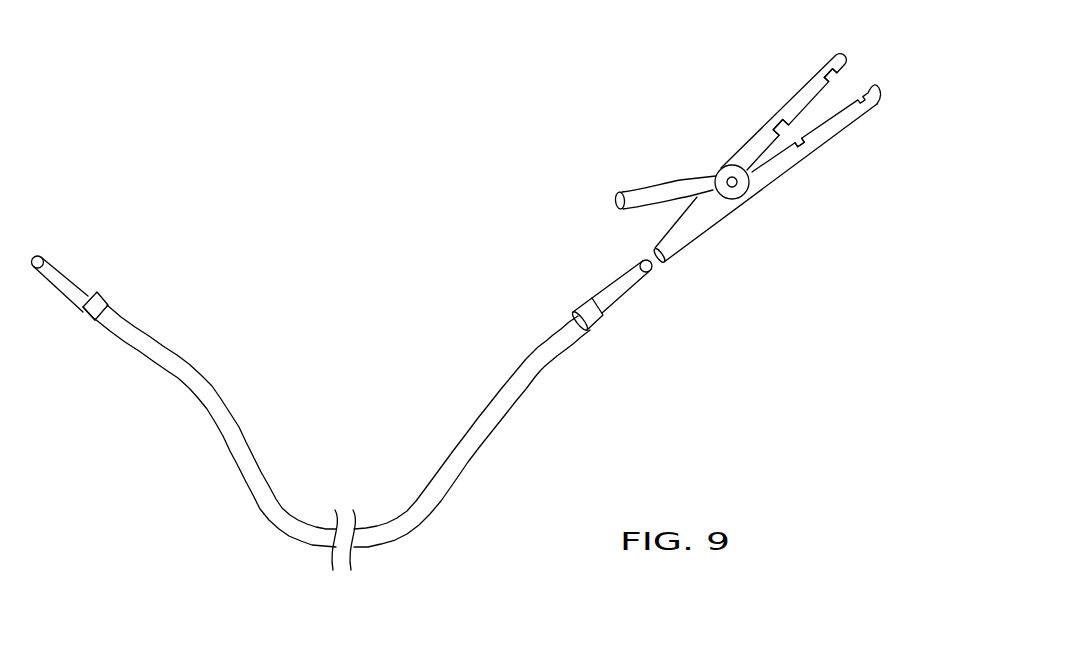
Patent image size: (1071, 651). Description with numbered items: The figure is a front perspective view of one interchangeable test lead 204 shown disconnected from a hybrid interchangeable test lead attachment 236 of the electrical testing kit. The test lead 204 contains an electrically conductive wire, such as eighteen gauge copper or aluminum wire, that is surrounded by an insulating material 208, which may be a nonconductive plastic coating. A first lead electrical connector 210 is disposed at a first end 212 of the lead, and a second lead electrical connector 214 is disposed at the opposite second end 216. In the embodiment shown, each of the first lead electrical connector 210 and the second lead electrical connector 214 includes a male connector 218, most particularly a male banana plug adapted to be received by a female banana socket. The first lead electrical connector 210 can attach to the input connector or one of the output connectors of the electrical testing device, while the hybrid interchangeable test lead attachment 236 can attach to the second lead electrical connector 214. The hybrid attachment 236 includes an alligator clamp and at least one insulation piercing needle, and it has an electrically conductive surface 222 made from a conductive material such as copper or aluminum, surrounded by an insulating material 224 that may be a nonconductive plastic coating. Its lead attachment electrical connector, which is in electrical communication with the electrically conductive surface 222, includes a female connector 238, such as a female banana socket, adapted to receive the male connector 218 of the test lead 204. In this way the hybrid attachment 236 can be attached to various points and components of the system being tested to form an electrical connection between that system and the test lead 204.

The interchangeable test lead 204 is at (200, 380).
The insulating material 208 is at (257, 506).
The first lead electrical connector 210 is at (82, 297).
The first end 212 is at (92, 314).
The second lead electrical connector 214 is at (612, 302).
The second end 216 is at (592, 330).
The male connector 218 is at (44, 259).
The electrically conductive surface 222 is at (803, 148).
The insulating material 224 is at (710, 214).
The hybrid interchangeable test lead attachment 236 is at (879, 60).
The female connector 238 is at (659, 268).